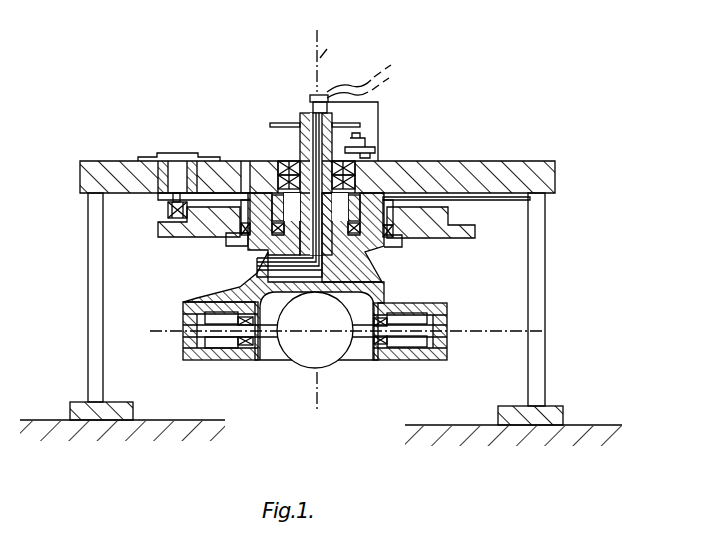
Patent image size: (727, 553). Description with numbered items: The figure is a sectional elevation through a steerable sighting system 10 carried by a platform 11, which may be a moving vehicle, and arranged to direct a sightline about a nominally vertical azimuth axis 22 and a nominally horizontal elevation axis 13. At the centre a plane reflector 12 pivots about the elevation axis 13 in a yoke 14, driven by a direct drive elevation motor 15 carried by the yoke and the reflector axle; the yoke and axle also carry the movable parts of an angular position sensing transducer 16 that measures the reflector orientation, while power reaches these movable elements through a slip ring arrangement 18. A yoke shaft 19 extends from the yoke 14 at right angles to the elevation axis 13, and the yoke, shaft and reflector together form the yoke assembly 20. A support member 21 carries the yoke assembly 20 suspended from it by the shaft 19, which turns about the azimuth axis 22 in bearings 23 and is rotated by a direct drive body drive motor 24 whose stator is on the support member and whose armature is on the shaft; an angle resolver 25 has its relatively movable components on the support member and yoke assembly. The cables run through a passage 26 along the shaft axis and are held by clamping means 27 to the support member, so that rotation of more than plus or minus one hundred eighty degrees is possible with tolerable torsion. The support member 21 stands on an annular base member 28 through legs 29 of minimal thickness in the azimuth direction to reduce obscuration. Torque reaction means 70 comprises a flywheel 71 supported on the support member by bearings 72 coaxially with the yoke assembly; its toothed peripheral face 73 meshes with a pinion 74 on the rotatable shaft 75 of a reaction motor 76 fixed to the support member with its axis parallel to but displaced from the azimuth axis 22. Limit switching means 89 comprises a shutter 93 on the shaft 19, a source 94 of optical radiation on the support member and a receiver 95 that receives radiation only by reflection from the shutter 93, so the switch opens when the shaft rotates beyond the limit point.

The steerable sighting system 10 is at (562, 283).
The platform 11 is at (600, 425).
The plane reflector 12 is at (327, 343).
The elevation axis 13 is at (475, 330).
The yoke 14 is at (437, 305).
The direct drive elevation motor 15 is at (404, 350).
The angular position sensing transducer 16 is at (222, 350).
The slip ring arrangement 18 is at (184, 358).
The yoke shaft 19 is at (371, 258).
The yoke assembly 20 is at (430, 289).
The support member 21 is at (519, 160).
The azimuth axis 22 is at (331, 41).
The bearings 23 is at (243, 240).
The body drive motor 24 is at (372, 206).
The angle resolver 25 is at (302, 163).
The passage 26 is at (314, 112).
The clamping means 27 is at (312, 95).
The annular base member 28 is at (553, 407).
The legs 29 is at (92, 245).
The torque reaction means 70 is at (157, 238).
The reaction member 71 is at (176, 238).
The bearings 72 is at (246, 198).
The peripheral face 73 is at (450, 212).
The pinion 74 is at (182, 220).
The rotatable shaft 75 is at (167, 207).
The reaction motor 76 is at (168, 156).
The limit switching means 89 is at (420, 113).
The shutter 93 is at (372, 116).
The source of optical radiation 94 is at (362, 126).
The receiver 95 is at (375, 149).